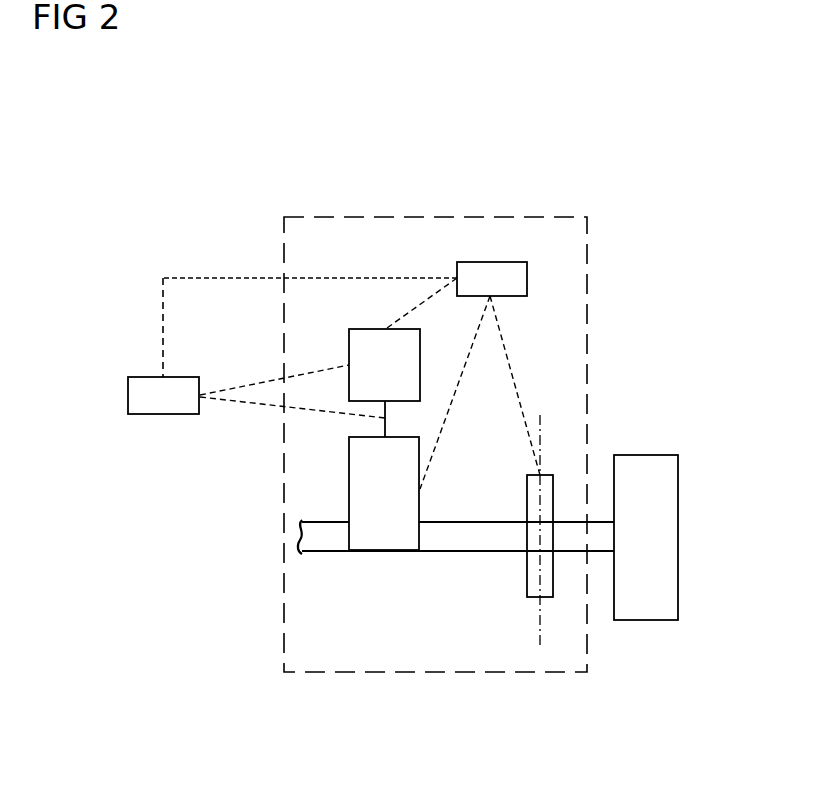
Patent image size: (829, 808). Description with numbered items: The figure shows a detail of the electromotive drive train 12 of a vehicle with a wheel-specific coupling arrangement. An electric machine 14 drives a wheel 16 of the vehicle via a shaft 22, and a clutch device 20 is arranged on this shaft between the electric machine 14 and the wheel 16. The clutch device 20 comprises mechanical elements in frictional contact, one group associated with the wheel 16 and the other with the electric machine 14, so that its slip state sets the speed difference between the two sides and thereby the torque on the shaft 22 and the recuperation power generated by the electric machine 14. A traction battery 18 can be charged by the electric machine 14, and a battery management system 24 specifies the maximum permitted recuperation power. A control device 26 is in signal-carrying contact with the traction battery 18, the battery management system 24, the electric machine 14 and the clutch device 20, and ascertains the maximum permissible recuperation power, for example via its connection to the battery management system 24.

The electromotive drive train 12 is at (456, 217).
The electric machine 14 is at (355, 487).
The wheel 16 is at (659, 535).
The traction battery 18 is at (370, 357).
The clutch device 20 is at (531, 577).
The shaft 22 is at (452, 545).
The battery management system 24 is at (168, 400).
The control device 26 is at (488, 278).